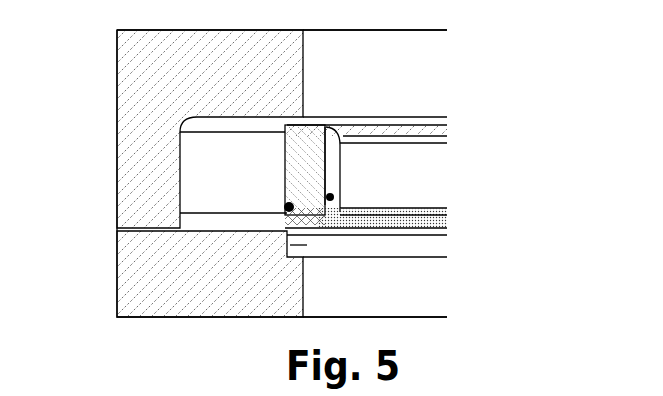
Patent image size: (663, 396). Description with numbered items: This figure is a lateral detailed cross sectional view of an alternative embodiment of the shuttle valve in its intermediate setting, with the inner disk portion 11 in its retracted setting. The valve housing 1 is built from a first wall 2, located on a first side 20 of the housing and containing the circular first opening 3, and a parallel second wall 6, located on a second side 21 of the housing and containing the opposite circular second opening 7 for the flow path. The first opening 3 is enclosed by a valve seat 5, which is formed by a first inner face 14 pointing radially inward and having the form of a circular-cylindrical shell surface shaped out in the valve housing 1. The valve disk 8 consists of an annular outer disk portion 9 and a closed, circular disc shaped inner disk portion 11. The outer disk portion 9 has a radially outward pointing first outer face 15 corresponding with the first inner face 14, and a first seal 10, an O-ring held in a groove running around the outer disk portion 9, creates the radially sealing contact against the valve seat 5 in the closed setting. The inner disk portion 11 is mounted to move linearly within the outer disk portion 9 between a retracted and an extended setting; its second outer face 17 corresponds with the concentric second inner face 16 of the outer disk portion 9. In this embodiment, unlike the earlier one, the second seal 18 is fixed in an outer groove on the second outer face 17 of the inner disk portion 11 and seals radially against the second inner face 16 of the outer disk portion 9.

The valve housing 1 is at (106, 53).
The first wall 2 is at (243, 289).
The first opening 3 is at (428, 290).
The valve seat 5 is at (272, 269).
The second wall 6 is at (247, 85).
The second opening 7 is at (447, 78).
The valve disk 8 is at (474, 179).
The outer disk portion 9 is at (325, 172).
The first seal 10 is at (289, 207).
The inner disk portion 11 is at (447, 130).
The first inner face 14 is at (307, 246).
The first outer face 15 is at (320, 187).
The second inner face 16 is at (350, 172).
The second outer face 17 is at (350, 180).
The second seal 18 is at (357, 196).
The first side 20 is at (359, 288).
The second side 21 is at (338, 80).